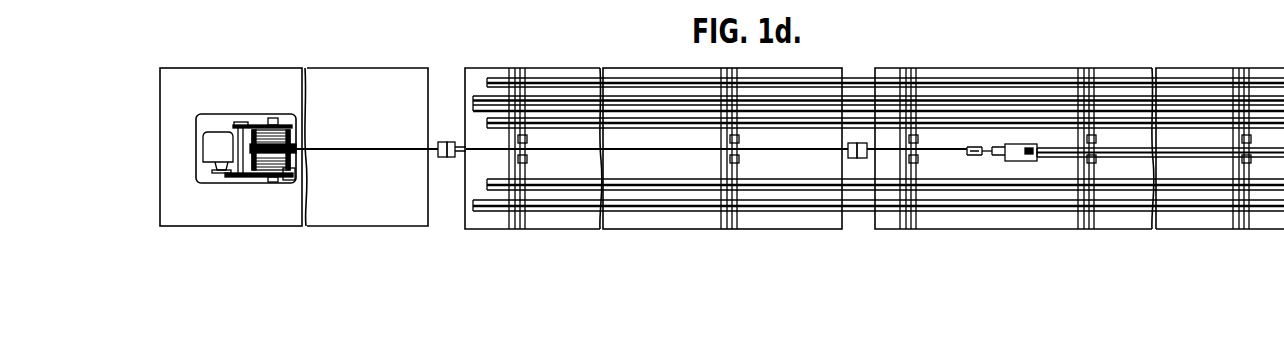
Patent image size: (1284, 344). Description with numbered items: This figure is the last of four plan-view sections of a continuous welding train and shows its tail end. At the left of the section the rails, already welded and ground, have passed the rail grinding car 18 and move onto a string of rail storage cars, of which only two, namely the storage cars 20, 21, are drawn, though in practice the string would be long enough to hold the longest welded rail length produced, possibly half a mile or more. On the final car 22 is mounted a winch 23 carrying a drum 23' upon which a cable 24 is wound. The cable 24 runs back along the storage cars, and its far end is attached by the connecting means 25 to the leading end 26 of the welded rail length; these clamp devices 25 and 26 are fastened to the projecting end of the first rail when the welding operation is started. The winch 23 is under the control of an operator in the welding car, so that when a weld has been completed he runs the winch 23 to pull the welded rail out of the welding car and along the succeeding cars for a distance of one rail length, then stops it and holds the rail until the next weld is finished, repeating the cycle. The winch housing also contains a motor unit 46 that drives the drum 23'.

The rail grinding car 18 is at (1270, 227).
The rail storage car 20 is at (1133, 223).
The rail storage car 21 is at (573, 220).
The final car 22 is at (368, 218).
The winch 23 is at (246, 116).
The drum 23' is at (273, 195).
The cable 24 is at (366, 148).
The connecting means 25 is at (1017, 160).
The leading end of the welded rail length 26 is at (1040, 161).
The motor 46 is at (210, 148).